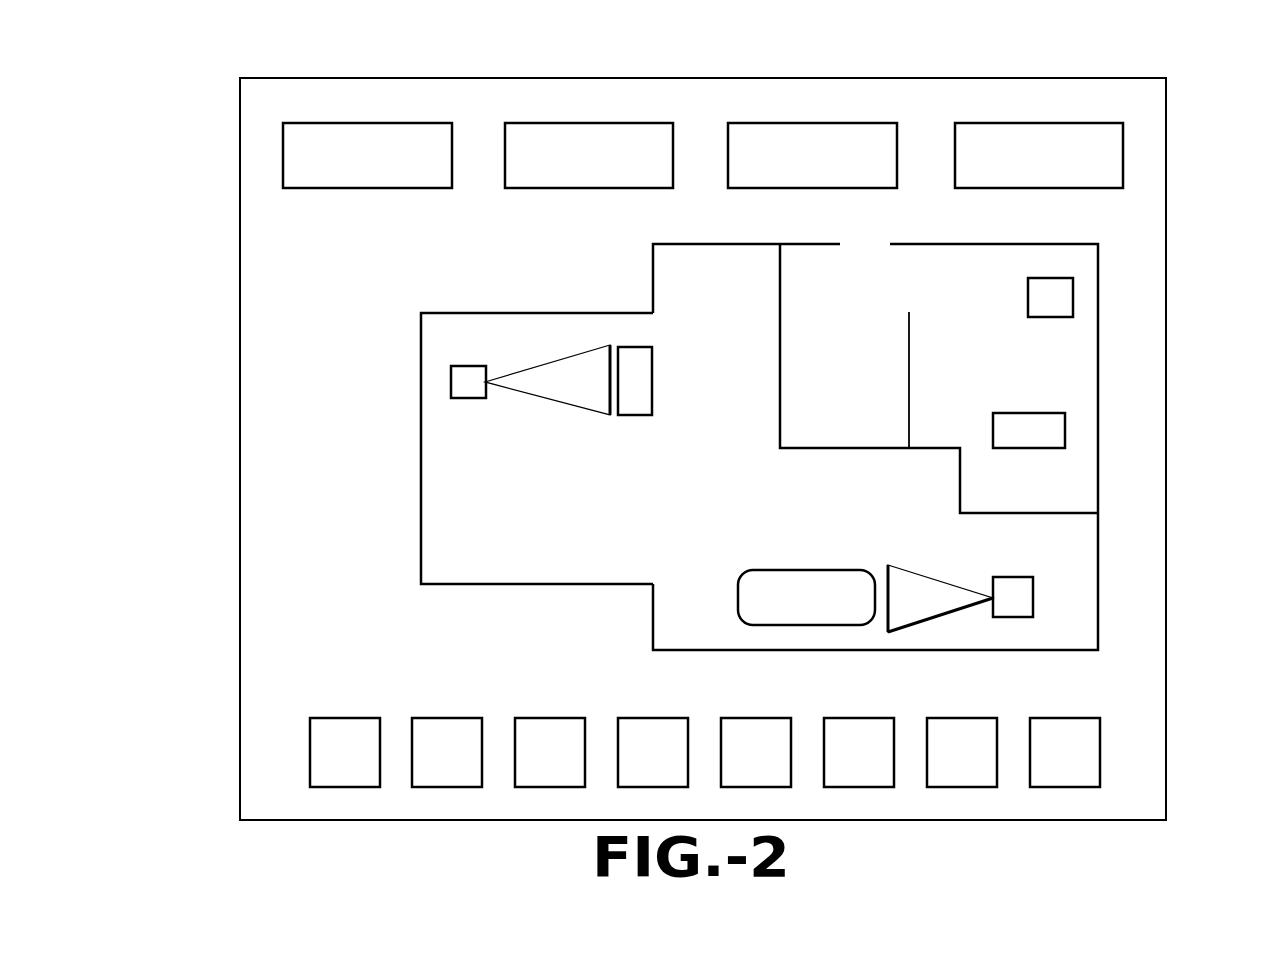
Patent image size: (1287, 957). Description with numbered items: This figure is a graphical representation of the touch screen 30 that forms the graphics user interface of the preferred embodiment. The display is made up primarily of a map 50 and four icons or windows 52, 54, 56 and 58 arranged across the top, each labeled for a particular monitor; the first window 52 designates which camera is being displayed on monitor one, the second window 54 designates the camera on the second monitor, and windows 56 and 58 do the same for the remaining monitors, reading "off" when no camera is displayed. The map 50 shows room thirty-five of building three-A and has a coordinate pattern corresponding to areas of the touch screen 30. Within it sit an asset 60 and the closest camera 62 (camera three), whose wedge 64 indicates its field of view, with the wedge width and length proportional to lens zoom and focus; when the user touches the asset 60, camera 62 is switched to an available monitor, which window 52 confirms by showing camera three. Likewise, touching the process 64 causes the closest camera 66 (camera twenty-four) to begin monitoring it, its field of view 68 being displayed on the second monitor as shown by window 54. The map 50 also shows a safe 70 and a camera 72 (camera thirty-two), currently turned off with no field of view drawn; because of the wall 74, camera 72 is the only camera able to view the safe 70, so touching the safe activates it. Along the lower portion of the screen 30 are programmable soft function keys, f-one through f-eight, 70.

The screen 30 is at (447, 821).
The map 50 is at (420, 536).
The first window 52 is at (283, 148).
The second window 54 is at (505, 150).
The third window 56 is at (728, 152).
The fourth window 58 is at (955, 152).
The asset 60 is at (612, 418).
The camera 62 is at (451, 390).
The wedge 64 is at (538, 367).
The camera 66 is at (1033, 597).
The field of view 68 is at (950, 618).
The safe 70 is at (1065, 425).
The camera 72 is at (1073, 297).
The wall 74 is at (1098, 508).